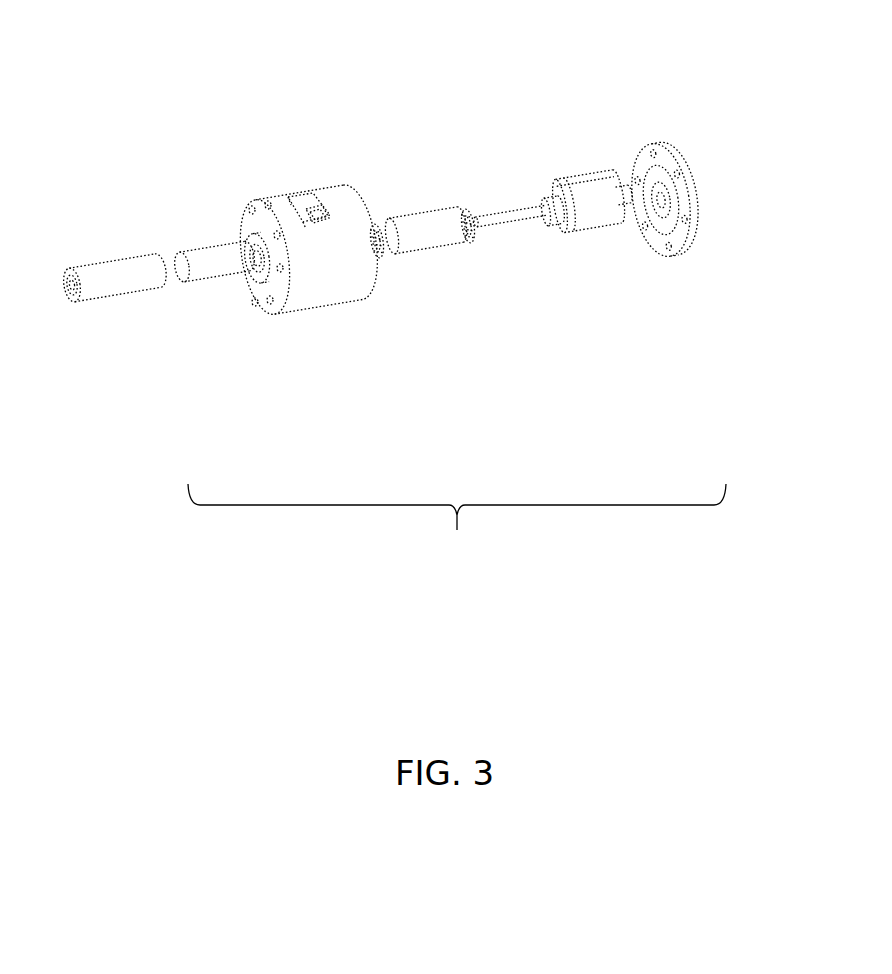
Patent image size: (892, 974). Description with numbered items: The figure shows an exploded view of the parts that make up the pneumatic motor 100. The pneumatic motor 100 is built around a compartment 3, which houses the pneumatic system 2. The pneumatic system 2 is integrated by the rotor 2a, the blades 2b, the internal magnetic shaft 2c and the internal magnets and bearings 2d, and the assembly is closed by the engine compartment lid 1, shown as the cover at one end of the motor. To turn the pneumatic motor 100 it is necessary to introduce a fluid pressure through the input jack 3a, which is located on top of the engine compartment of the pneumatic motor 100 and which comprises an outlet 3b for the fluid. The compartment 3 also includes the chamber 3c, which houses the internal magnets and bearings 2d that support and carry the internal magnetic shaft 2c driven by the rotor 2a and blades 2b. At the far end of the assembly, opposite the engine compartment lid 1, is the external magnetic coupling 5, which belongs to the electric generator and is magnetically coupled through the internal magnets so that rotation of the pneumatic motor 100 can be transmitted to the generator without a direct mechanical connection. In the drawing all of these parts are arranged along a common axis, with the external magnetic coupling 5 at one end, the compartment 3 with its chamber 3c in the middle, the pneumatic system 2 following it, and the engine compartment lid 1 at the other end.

The pneumatic motor 100 is at (457, 531).
The engine compartment lid 1 is at (693, 256).
The pneumatic system 2 is at (602, 279).
The rotor 2a is at (626, 213).
The blades 2b is at (595, 234).
The internal magnetic shaft 2c is at (516, 221).
The internal magnets and bearings 2d is at (469, 249).
The compartment 3 is at (309, 252).
The input jack 3a is at (296, 197).
The outlet 3b is at (318, 212).
The chamber 3c is at (185, 248).
The external magnetic coupling 5 is at (86, 312).